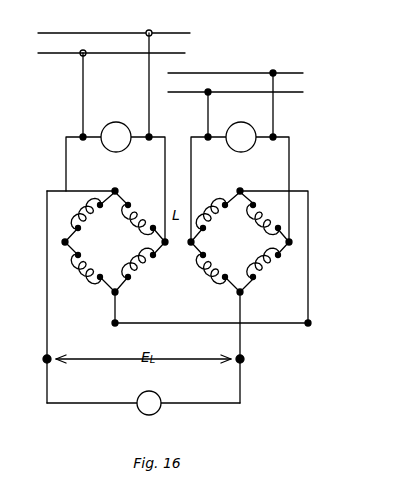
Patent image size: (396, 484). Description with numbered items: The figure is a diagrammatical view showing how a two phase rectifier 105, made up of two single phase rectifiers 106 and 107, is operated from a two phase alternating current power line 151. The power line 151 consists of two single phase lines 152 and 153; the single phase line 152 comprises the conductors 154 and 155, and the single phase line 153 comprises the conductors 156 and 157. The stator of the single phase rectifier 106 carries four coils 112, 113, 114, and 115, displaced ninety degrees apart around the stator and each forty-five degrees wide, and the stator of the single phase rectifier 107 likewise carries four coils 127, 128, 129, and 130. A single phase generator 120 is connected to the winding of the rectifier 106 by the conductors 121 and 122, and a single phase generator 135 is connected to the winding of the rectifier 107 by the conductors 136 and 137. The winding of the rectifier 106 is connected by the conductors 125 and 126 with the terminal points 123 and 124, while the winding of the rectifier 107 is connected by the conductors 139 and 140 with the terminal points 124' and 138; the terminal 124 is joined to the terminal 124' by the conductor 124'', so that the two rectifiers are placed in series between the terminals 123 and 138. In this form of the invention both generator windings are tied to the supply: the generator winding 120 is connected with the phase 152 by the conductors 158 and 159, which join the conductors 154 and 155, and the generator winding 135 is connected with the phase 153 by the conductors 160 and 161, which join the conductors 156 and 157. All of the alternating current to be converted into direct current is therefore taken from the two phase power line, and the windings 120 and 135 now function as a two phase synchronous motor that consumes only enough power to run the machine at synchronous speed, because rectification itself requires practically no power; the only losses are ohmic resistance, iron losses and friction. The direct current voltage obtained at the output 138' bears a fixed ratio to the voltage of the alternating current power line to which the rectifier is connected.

The two phase rectifier 105 is at (206, 264).
The single phase rectifier 106 is at (146, 216).
The single phase rectifier 107 is at (208, 216).
The coil 112 is at (89, 219).
The coil 113 is at (139, 222).
The coil 114 is at (137, 263).
The coil 115 is at (92, 266).
The single phase generator 120 is at (104, 127).
The conductor 121 is at (165, 165).
The conductor 122 is at (66, 165).
The terminal point 123 is at (44, 359).
The terminal point 124 is at (99, 323).
The terminal point 124' is at (327, 324).
The conductor 124'' is at (211, 314).
The conductor 125 is at (47, 280).
The conductor 126 is at (115, 307).
The coil 127 is at (221, 215).
The coil 128 is at (262, 223).
The coil 129 is at (263, 264).
The coil 130 is at (215, 262).
The single phase generator 135 is at (230, 127).
The conductor 136 is at (289, 165).
The conductor 137 is at (191, 165).
The terminal point 138 is at (263, 359).
The output 138' is at (143, 396).
The conductor 139 is at (308, 252).
The conductor 140 is at (240, 312).
The two phase alternating current power line 151 is at (198, 72).
The single phase line 152 is at (119, 53).
The single phase line 153 is at (240, 82).
The conductor 154 is at (175, 33).
The conductor 155 is at (185, 53).
The conductor 156 is at (293, 73).
The conductor 157 is at (300, 92).
The conductor 158 is at (149, 91).
The conductor 159 is at (83, 91).
The conductor 160 is at (273, 115).
The conductor 161 is at (208, 115).